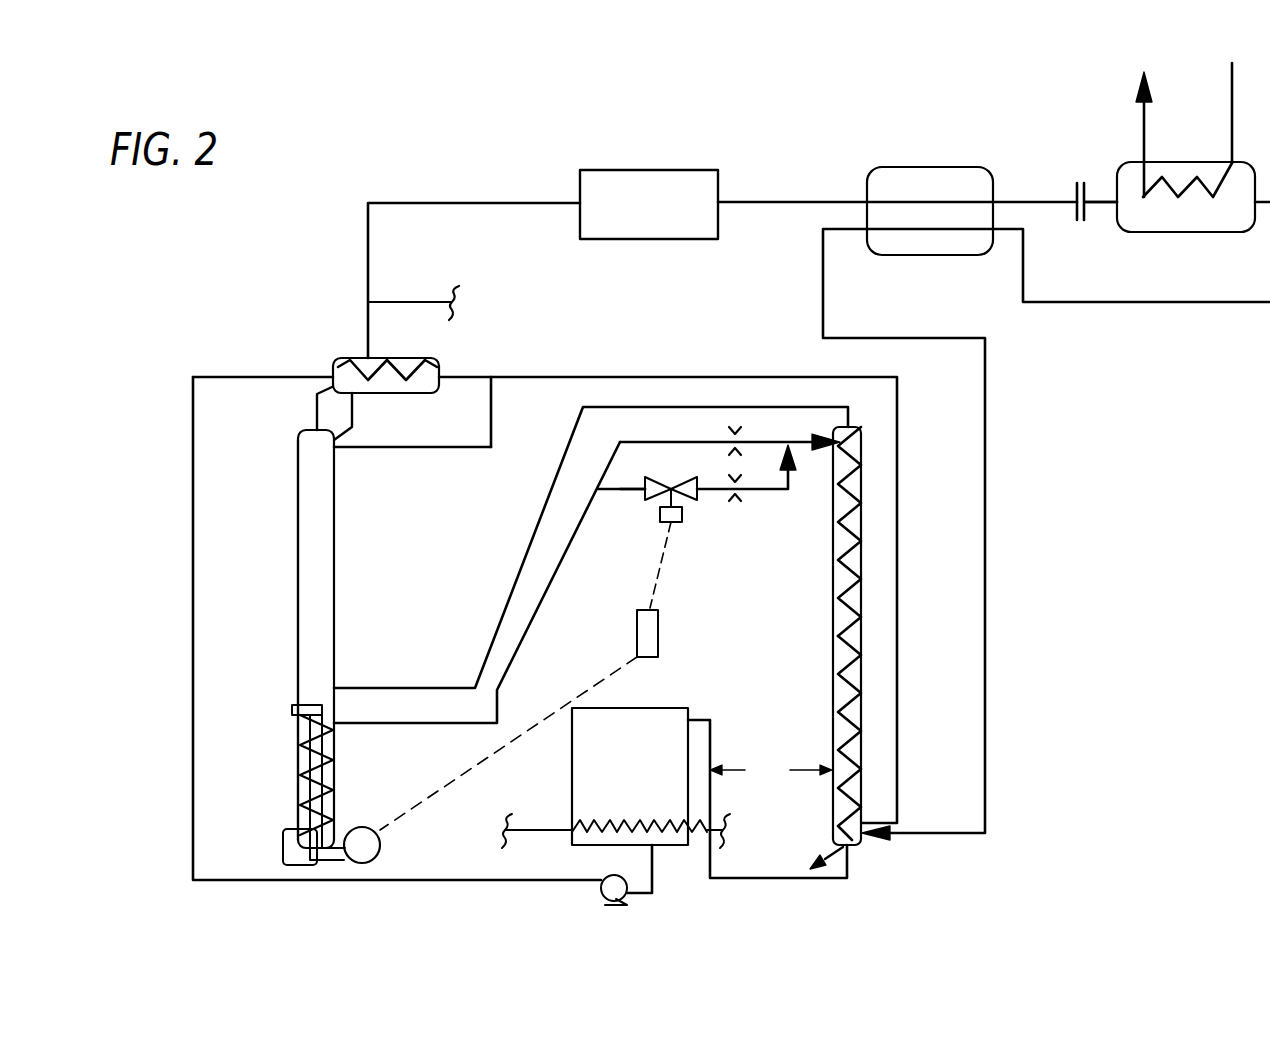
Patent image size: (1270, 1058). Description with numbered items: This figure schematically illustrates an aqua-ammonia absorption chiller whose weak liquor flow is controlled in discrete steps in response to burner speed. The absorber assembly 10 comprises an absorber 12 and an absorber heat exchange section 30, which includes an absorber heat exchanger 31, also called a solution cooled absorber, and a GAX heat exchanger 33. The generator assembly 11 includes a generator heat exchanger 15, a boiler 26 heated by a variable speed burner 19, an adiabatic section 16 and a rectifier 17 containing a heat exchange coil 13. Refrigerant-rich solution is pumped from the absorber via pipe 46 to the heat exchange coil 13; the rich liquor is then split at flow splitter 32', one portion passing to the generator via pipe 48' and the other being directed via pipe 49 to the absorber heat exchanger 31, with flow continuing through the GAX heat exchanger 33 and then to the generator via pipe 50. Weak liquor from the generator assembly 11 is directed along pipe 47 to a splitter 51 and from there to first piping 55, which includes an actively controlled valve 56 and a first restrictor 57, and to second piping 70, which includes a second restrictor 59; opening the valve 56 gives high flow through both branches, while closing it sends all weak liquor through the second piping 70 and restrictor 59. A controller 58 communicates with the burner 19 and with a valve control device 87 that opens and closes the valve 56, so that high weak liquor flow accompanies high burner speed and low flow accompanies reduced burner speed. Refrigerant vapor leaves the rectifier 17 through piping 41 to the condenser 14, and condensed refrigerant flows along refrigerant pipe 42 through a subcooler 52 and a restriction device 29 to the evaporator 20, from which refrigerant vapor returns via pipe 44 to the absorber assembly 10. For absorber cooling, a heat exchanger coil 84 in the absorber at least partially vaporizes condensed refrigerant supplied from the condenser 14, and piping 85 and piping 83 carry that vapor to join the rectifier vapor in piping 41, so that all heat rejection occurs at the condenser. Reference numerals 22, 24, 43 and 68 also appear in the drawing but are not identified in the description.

The absorber assembly 10 is at (771, 769).
The generator assembly 11 is at (336, 593).
The absorber 12 is at (640, 708).
The heat exchange coil 13 is at (398, 362).
The condenser 14 is at (668, 170).
The generator heat exchanger 15 is at (335, 755).
The adiabatic section 16 is at (298, 495).
The rectifier section 17 is at (338, 362).
The variable speed burner 19 is at (380, 842).
The evaporator 20 is at (1194, 232).
The fuel inlet 22 is at (1234, 97).
The exhaust outlet 24 is at (1144, 120).
The boiler 26 is at (298, 762).
The restriction device 29 is at (1075, 185).
The absorber heat exchange section 30 is at (833, 620).
The absorber heat exchanger 31 is at (835, 712).
The flow splitter 32' is at (519, 390).
The GAX heat exchanger 33 is at (835, 555).
The piping 41 is at (425, 203).
The refrigerant pipe 42 is at (770, 202).
The line to heat exchanger 43 is at (1108, 195).
The pipe 44 is at (1165, 302).
The pipe 46 is at (445, 880).
The pipe 47 is at (528, 635).
The pipe 48' is at (412, 460).
The pipe 49 is at (660, 377).
The pipe 50 is at (528, 543).
The splitter 51 is at (600, 493).
The subcooler 52 is at (928, 167).
The first piping 55 is at (625, 492).
The actively controlled valve 56 is at (655, 478).
The first restrictor 57 is at (740, 504).
The controller 58 is at (660, 632).
The second restrictor 59 is at (740, 428).
The sump 68 is at (283, 848).
The second piping 70 is at (678, 442).
The piping 83 is at (405, 302).
The heat exchanger coil 84 is at (585, 842).
The piping 85 is at (548, 830).
The valve control device 87 is at (683, 520).